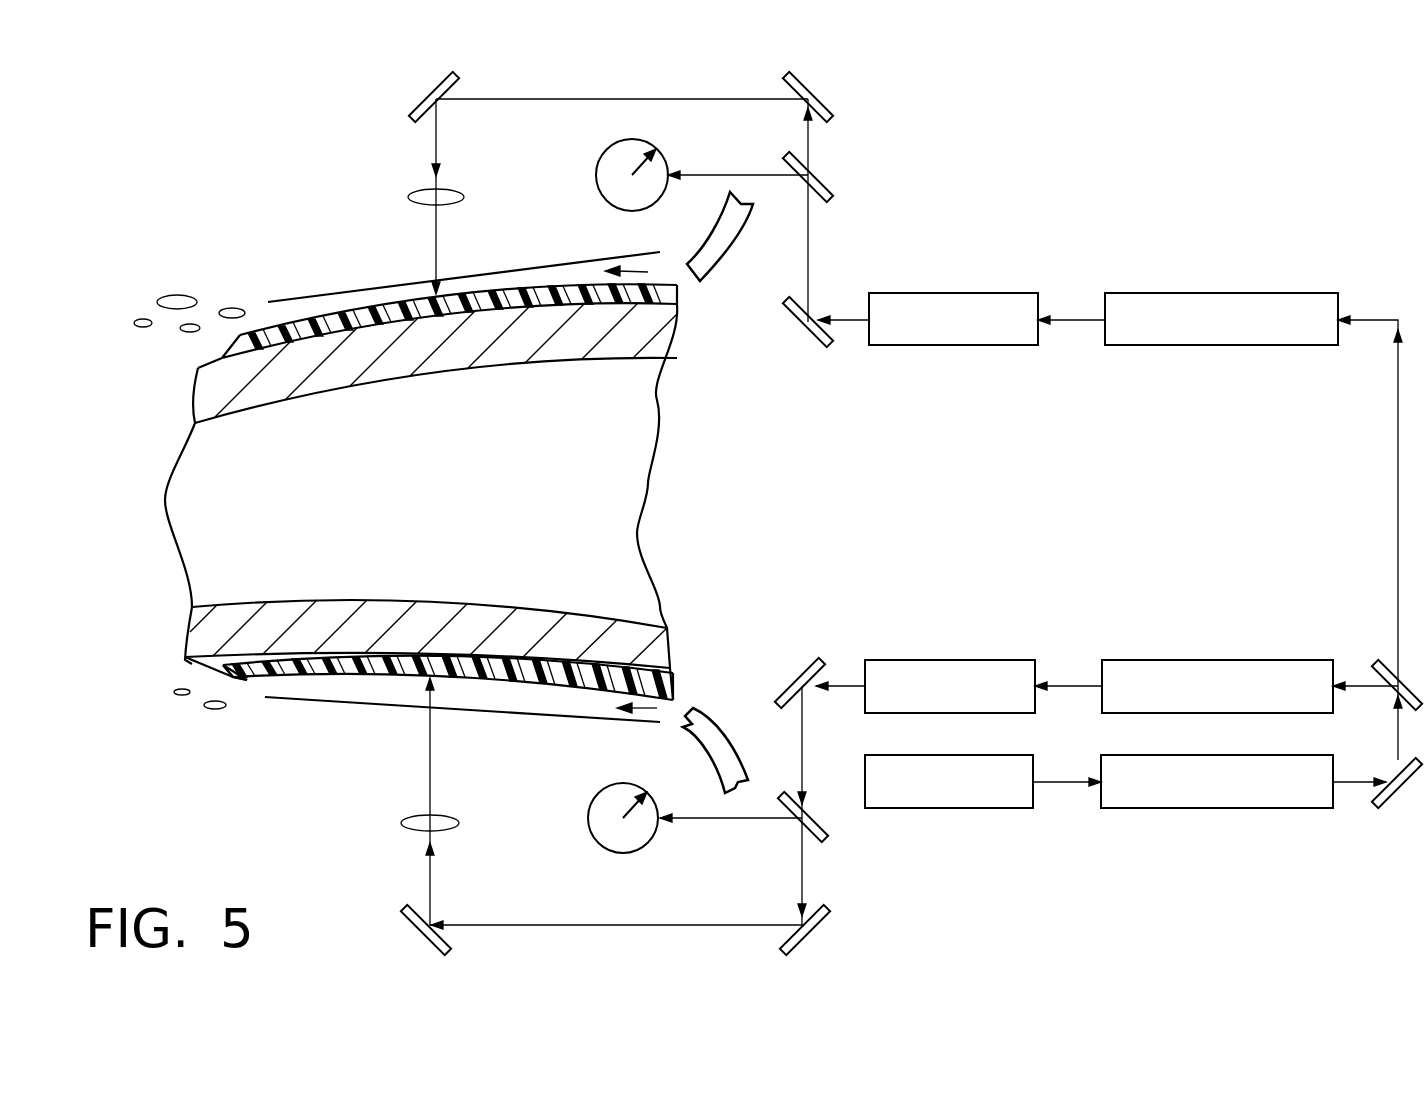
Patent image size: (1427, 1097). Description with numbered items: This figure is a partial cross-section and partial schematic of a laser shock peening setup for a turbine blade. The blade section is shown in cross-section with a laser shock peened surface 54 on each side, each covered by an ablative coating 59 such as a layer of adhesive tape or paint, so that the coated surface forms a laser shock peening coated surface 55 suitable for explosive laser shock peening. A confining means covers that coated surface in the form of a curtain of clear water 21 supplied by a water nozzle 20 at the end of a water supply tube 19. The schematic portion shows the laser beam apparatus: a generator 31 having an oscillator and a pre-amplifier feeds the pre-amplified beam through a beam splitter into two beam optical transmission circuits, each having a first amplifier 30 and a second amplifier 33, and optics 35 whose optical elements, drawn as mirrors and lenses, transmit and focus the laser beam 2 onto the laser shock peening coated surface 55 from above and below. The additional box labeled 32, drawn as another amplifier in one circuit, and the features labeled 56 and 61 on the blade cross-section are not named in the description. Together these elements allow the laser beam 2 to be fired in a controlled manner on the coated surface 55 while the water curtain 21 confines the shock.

The laser beam 2 is at (430, 777).
The water supply tube 19 is at (727, 740).
The water nozzle 20 is at (687, 723).
The curtain of water 21 is at (545, 700).
The first amplifier 30 is at (1205, 293).
The generator 31 is at (1023, 808).
The amplifier 32 is at (925, 293).
The second amplifier 33 is at (920, 660).
The optics 35 is at (850, 160).
The laser shock peened surface 54 is at (205, 367).
The laser shock peening coated surface 55 is at (245, 688).
The tube body 56 is at (398, 617).
The ablative coating 59 is at (473, 672).
The end portion 61 is at (647, 670).